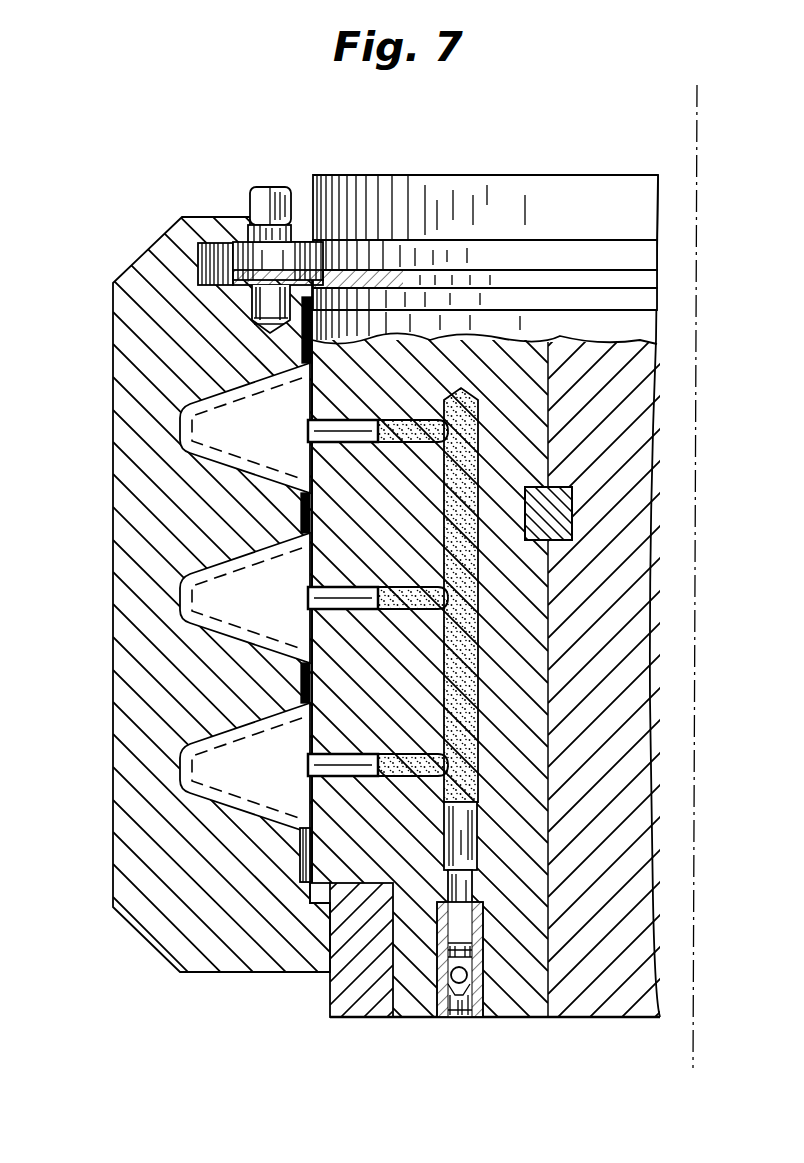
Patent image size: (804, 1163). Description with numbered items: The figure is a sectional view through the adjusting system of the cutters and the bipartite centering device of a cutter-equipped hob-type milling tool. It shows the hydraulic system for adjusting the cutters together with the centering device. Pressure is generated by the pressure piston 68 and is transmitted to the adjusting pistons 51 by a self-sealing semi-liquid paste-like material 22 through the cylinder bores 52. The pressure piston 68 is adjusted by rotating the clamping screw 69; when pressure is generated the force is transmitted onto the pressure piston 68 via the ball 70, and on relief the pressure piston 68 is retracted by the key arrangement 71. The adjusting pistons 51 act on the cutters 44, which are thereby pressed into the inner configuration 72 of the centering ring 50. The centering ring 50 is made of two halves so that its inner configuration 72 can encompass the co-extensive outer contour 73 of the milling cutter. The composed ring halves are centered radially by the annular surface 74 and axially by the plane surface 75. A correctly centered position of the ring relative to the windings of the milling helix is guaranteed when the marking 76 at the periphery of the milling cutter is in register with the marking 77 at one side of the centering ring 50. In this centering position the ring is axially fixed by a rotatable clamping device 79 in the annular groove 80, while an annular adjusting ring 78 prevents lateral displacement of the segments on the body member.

The self-sealing semi-liquid paste-like material 22 is at (470, 680).
The cutters 44 is at (275, 442).
The centering ring 50 is at (113, 380).
The adjusting piston 51 is at (343, 590).
The cylinder bore 52 is at (410, 420).
The pressure piston 68 is at (472, 842).
The clamping screw 69 is at (455, 1018).
The ball 70 is at (480, 1012).
The key arrangement 71 is at (440, 947).
The inner configuration 72 is at (235, 467).
The outer contour 73 is at (258, 480).
The annular surface 74 is at (302, 220).
The plane surface 75 is at (317, 906).
The marking 76 is at (437, 184).
The marking 77 is at (510, 240).
The annular adjusting ring 78 is at (575, 520).
The rotatable clamping device 79 is at (243, 245).
The annular groove 80 is at (256, 294).